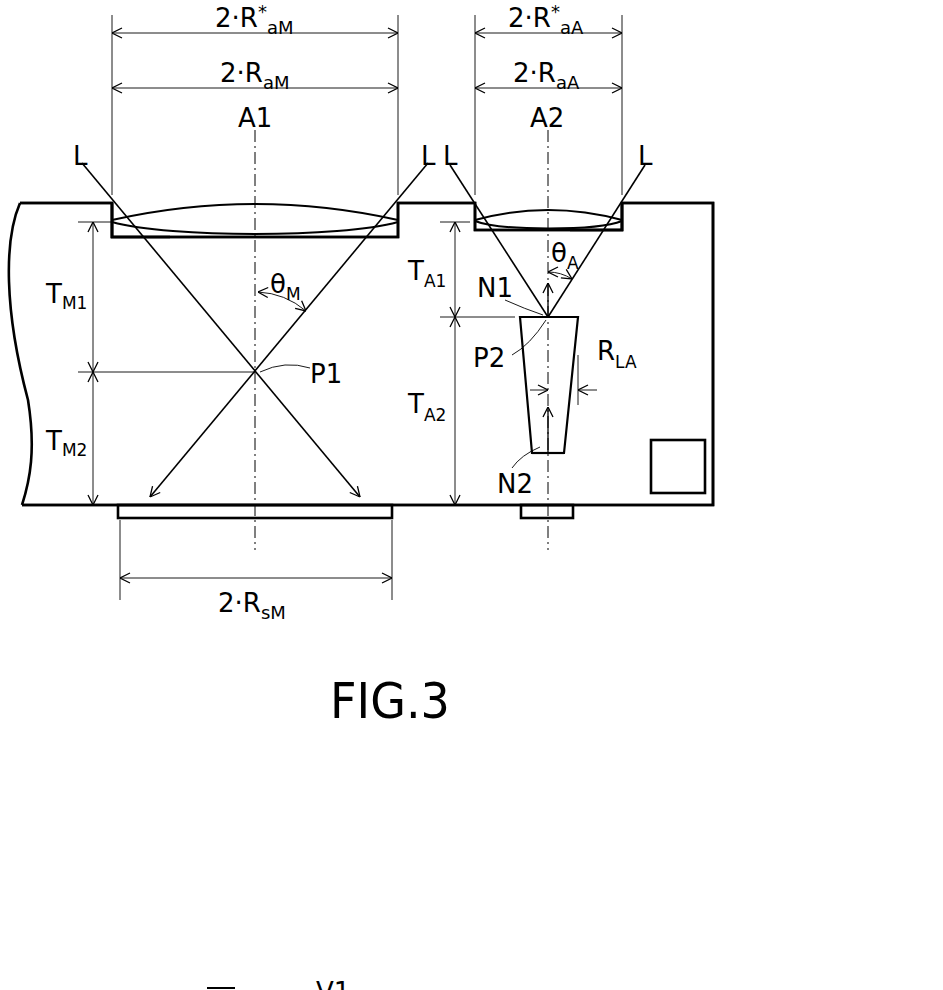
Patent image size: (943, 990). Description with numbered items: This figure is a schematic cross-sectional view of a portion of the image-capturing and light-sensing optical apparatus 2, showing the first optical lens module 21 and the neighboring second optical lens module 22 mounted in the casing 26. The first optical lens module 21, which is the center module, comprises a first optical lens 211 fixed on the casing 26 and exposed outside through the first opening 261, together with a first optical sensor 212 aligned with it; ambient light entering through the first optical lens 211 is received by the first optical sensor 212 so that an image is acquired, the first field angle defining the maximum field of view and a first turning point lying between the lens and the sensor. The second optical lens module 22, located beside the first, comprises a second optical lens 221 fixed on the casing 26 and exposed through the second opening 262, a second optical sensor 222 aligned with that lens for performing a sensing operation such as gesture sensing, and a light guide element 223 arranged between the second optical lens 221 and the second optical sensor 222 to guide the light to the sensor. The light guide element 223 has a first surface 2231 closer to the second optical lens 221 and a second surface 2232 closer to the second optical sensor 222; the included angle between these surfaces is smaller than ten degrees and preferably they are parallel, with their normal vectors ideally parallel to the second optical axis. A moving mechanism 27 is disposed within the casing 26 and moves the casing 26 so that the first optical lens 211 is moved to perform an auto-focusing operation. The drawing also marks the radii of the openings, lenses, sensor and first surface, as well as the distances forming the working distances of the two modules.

The image-capturing and light-sensing optical apparatus 2 is at (700, 29).
The first optical lens module 21 is at (231, 422).
The first optical lens 211 is at (303, 218).
The first optical sensor 212 is at (118, 507).
The second optical lens module 22 is at (545, 367).
The second optical lens 221 is at (583, 220).
The second optical sensor 222 is at (580, 516).
The light guide element 223 is at (560, 375).
The first surface 2231 is at (556, 322).
The second surface 2232 is at (603, 450).
The casing 26 is at (390, 354).
The first opening 261 is at (115, 241).
The second opening 262 is at (625, 229).
The moving mechanism 27 is at (693, 475).